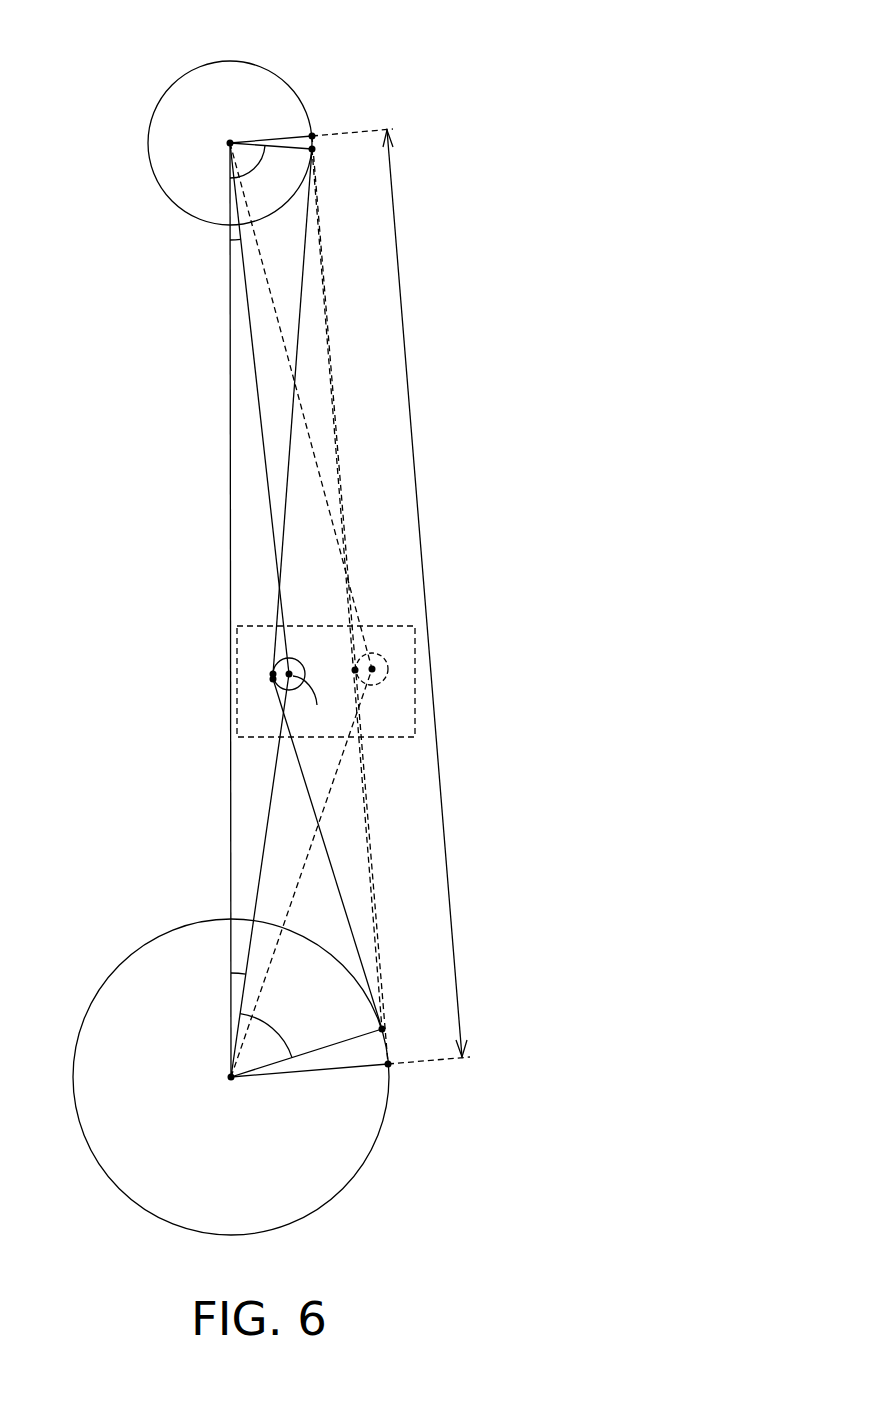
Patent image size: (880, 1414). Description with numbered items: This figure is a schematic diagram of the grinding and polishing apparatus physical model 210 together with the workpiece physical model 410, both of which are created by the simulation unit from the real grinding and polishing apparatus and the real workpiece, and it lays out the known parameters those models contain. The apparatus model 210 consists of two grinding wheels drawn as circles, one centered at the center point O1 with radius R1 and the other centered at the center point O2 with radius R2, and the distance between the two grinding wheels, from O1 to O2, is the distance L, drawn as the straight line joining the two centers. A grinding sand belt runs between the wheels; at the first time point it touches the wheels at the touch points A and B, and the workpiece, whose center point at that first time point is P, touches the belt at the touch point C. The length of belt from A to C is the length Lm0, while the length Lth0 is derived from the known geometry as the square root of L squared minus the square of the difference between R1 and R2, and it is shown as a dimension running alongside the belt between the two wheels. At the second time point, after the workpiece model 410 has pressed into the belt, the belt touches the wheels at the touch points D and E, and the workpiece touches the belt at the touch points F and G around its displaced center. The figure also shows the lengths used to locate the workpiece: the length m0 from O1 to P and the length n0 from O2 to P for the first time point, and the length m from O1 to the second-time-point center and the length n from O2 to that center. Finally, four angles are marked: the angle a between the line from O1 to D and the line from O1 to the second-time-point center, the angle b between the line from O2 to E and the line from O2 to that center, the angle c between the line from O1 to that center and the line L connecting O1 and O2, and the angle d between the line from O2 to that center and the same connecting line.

The grinding and polishing apparatus physical model 210 is at (519, 30).
The workpiece physical model 410 is at (282, 689).
The center point of the first grinding wheel O1 is at (230, 143).
The center point of the second grinding wheel O2 is at (231, 1077).
The distance between the two grinding wheels L is at (219, 610).
The radius of the first grinding wheel R1 is at (271, 123).
The radius of the second grinding wheel R2 is at (309, 1085).
The touch point between the grinding sand belt and the first grinding wheel at the f A is at (322, 122).
The touch point between the grinding sand belt and the second grinding wheel at the B is at (398, 1078).
The touch point between the grinding sand belt and the first grinding wheel at the s D is at (283, 158).
The touch point between the grinding sand belt and the second grinding wheel at the E is at (319, 1045).
The length from O1 to P' m is at (260, 408).
The length from O2 to P' n is at (270, 805).
The length from O1 to P m0 is at (285, 354).
The length from O2 to P n0 is at (305, 858).
The touch point between the workpiece and the grinding sand belt at the second time F is at (282, 413).
The touch point between the workpiece and the grinding sand belt at the second time G is at (315, 853).
The length from A to C Lm0 is at (328, 333).
The theoretical belt span length Lth0 is at (432, 593).
The touch point between the workpiece and the grinding sand belt at the first time p C is at (345, 671).
The center point of the workpiece at the first time point P is at (375, 668).
The angle formed by line O1-D and line O1-P' a is at (254, 163).
The angle formed by line O2-E and line O2-P' b is at (266, 1030).
The angle formed by line O1-P' and line O1-O2 c is at (227, 241).
The angle formed by line O2-P' and line O1-O2 d is at (229, 959).